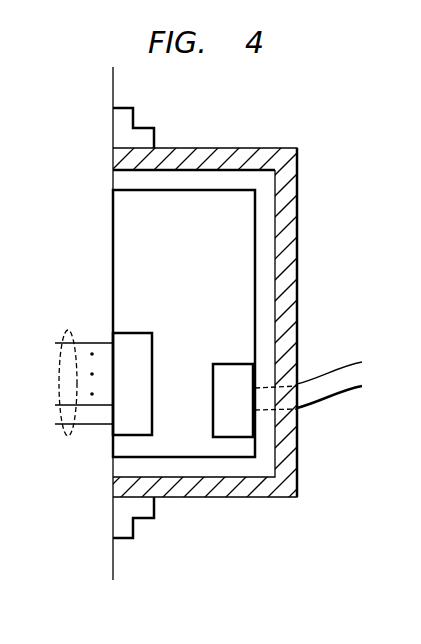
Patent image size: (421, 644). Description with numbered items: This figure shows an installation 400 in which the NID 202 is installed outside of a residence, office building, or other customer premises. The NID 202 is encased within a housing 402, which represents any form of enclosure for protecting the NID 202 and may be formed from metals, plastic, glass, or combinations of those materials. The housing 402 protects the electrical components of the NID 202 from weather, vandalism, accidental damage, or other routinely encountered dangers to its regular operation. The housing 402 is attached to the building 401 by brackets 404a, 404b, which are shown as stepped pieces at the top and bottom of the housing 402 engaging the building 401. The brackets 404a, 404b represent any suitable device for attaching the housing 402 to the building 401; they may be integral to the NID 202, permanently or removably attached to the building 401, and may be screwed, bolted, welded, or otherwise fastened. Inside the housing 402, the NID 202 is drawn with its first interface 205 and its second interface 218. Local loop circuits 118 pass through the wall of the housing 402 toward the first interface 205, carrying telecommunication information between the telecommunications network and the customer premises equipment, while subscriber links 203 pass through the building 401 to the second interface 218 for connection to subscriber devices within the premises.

The network interface device assembly 400 is at (306, 114).
The building 401 is at (112, 88).
The housing 402 is at (240, 148).
The bracket 404a is at (163, 106).
The bracket 404b is at (143, 521).
The NID 202 is at (203, 260).
The subscriber links 203 is at (69, 330).
The first interface 205 is at (236, 364).
The second interface 218 is at (129, 333).
The local loop circuits 118 is at (329, 367).